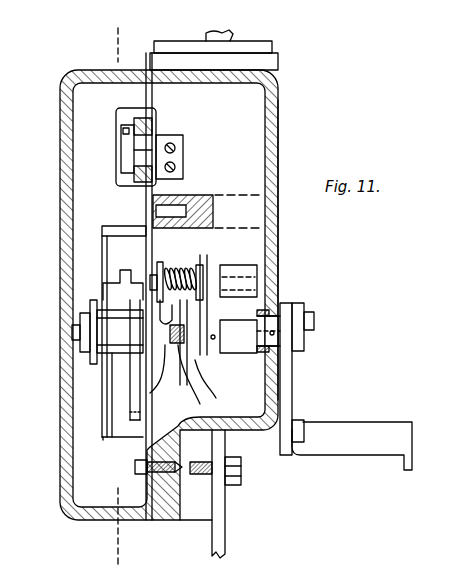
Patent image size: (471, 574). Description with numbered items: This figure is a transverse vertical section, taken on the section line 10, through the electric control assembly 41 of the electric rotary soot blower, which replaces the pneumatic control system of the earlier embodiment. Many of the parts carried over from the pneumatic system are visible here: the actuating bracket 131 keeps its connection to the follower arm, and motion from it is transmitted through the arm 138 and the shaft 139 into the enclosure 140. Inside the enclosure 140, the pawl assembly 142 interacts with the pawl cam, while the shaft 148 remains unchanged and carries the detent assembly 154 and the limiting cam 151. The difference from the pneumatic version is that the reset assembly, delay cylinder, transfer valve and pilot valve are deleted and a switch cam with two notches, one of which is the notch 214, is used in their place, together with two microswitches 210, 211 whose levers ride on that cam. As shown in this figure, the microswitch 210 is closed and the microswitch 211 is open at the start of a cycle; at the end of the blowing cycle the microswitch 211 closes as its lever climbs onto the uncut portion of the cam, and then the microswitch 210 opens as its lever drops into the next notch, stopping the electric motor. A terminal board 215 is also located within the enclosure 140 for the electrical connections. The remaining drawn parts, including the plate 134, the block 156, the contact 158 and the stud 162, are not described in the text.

The section line 10 is at (111, 48).
The electric control assembly 41 is at (98, 232).
The actuating bracket 131 is at (368, 425).
The plate 134 is at (300, 362).
The arm 138 is at (284, 304).
The shaft 139 is at (270, 341).
The enclosure 140 is at (279, 214).
The pawl assembly 142 is at (221, 257).
The shaft 148 is at (108, 338).
The limiting cam 151 is at (212, 388).
The detent assembly 154 is at (177, 264).
The contact block 156 is at (210, 300).
The contact 158 is at (184, 345).
The mounting stud 162 is at (178, 444).
The microswitch 210 is at (113, 257).
The microswitch 211 is at (106, 440).
The notch 214 is at (122, 364).
The terminal board 215 is at (132, 152).